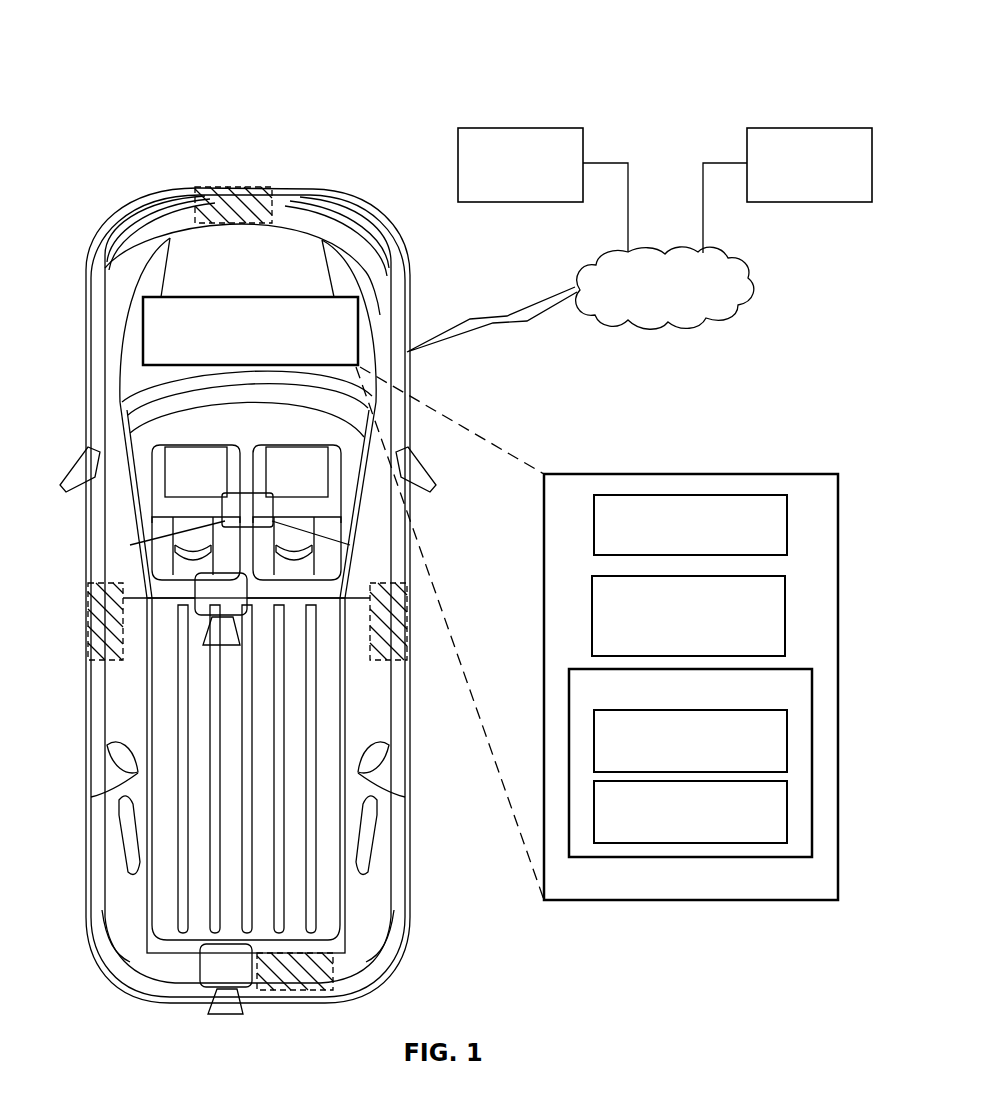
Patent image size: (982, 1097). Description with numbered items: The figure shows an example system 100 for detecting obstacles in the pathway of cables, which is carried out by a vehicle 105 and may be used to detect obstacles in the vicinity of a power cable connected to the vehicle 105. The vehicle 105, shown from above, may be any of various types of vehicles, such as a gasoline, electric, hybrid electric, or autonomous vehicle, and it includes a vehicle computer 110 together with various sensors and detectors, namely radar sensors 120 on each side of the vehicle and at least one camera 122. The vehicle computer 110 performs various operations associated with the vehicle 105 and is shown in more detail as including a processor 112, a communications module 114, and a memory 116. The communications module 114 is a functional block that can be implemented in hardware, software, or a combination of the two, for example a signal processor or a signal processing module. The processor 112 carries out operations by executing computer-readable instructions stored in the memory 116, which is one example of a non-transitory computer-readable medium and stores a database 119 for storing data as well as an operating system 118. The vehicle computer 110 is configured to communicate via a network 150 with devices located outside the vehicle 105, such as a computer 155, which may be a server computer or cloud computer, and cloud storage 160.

The system 100 is at (148, 78).
The vehicle 105 is at (88, 827).
The vehicle computer 110 is at (150, 296).
The processor 112 is at (787, 542).
The communications module 114 is at (785, 626).
The memory 116 is at (812, 702).
The operating system (OS) 118 is at (787, 829).
The database 119 is at (787, 759).
The radar sensors 120 is at (230, 185).
The camera 122 is at (223, 647).
The network 150 is at (687, 323).
The computer 155 is at (538, 128).
The cloud storage 160 is at (795, 127).